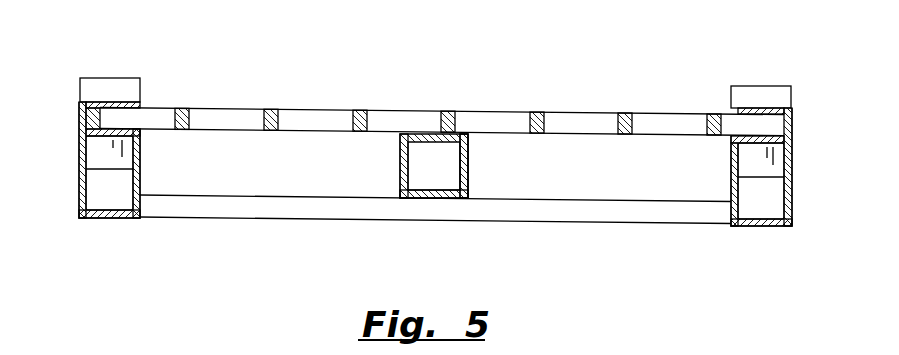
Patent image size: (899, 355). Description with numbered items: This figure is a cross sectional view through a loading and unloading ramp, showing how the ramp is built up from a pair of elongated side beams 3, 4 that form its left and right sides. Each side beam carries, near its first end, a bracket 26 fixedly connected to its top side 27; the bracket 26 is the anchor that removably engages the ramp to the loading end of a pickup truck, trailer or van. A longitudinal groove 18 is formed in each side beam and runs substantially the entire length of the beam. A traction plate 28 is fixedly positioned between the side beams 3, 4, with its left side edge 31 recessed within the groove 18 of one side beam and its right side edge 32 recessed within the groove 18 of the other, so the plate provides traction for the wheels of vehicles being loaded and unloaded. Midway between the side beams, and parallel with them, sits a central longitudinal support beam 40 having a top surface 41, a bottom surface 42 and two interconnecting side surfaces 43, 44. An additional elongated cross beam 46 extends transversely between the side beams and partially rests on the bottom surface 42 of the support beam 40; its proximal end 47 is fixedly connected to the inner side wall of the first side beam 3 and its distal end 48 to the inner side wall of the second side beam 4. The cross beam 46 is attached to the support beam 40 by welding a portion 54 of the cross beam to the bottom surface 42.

The elongated side beam 3 is at (79, 176).
The elongated side beam 4 is at (793, 193).
The longitudinal groove 18 is at (123, 117).
The bracket 26 is at (114, 79).
The top side 27 is at (117, 102).
The traction plate 28 is at (358, 110).
The left side edge 31 is at (793, 130).
The right side edge 32 is at (82, 117).
The central longitudinal support beam 40 is at (469, 173).
The top surface 41 is at (422, 134).
The bottom surface 42 is at (430, 199).
The side surface 43 is at (469, 164).
The side surface 44 is at (400, 165).
The additional elongated cross beam 46 is at (658, 218).
The proximal end 47 is at (142, 203).
The distal end 48 is at (727, 213).
The welded portion 54 is at (397, 195).